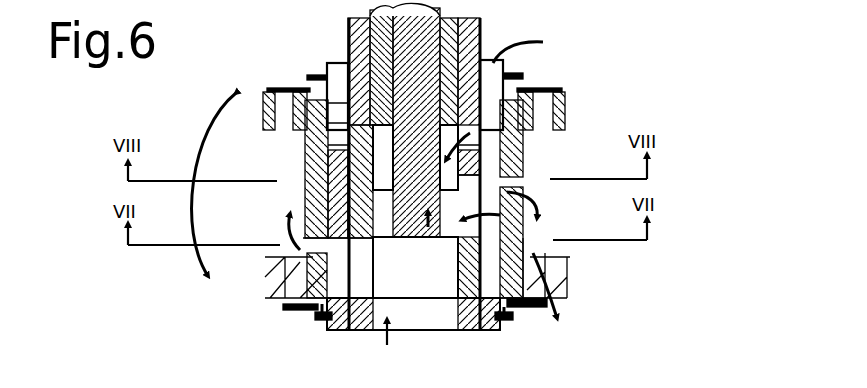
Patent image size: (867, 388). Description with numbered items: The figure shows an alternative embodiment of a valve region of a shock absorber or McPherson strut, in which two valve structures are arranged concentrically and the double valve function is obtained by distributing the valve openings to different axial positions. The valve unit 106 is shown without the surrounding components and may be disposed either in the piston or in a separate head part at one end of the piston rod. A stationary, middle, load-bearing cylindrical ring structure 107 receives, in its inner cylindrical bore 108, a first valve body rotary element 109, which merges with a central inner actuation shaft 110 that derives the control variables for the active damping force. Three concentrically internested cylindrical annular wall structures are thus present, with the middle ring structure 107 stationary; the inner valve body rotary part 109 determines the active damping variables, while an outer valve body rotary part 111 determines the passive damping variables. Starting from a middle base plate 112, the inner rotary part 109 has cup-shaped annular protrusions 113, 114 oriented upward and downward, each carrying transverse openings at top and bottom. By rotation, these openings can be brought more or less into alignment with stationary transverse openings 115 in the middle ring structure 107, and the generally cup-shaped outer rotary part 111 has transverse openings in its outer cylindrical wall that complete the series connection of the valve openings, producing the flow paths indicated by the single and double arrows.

The valve unit 106 is at (525, 237).
The middle ring structure 107 is at (297, 295).
The inner cylindrical bore 108 is at (458, 302).
The first valve body rotary element 109 is at (430, 238).
The inner actuation shaft 110 is at (378, 6).
The outer valve body rotary part 111 is at (306, 188).
The middle base plate 112 is at (389, 238).
The cup-shaped annular protrusion 113 is at (400, 323).
The cup-shaped annular protrusion 114 is at (346, 63).
The stationary transverse openings 115 is at (332, 145).